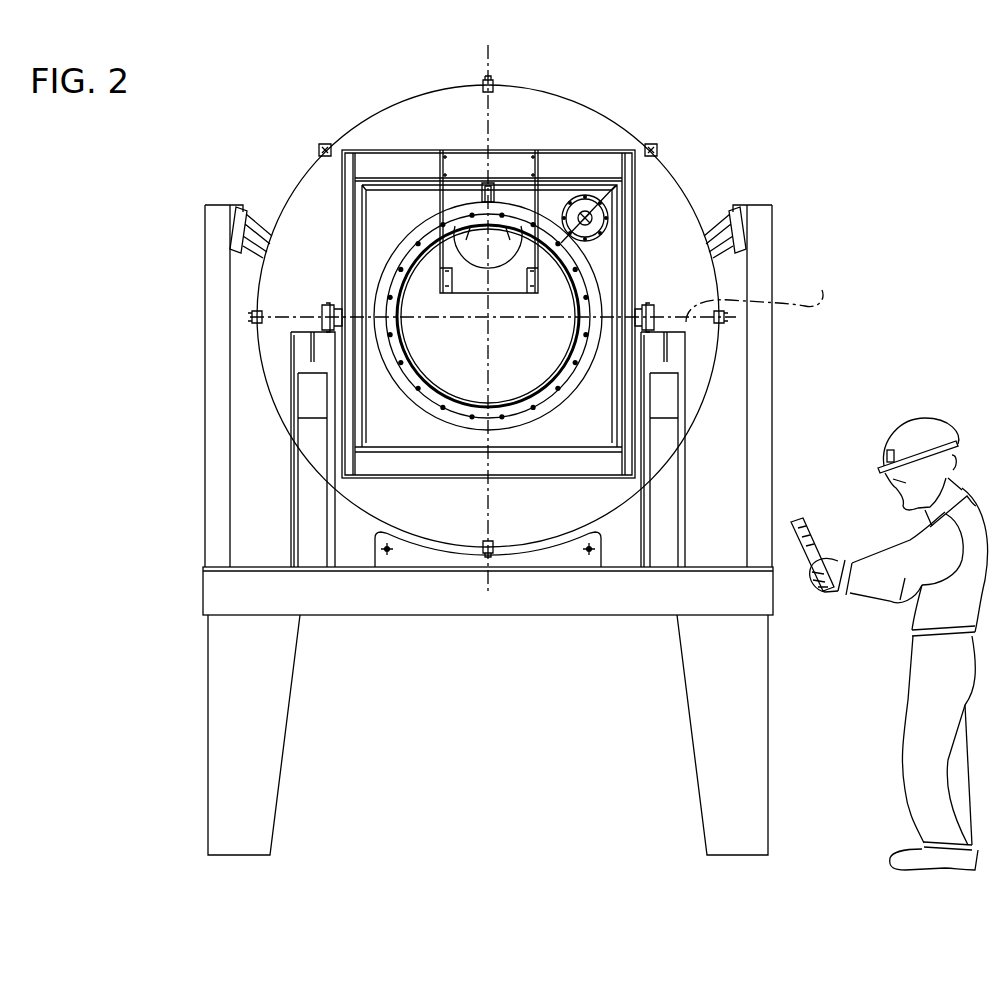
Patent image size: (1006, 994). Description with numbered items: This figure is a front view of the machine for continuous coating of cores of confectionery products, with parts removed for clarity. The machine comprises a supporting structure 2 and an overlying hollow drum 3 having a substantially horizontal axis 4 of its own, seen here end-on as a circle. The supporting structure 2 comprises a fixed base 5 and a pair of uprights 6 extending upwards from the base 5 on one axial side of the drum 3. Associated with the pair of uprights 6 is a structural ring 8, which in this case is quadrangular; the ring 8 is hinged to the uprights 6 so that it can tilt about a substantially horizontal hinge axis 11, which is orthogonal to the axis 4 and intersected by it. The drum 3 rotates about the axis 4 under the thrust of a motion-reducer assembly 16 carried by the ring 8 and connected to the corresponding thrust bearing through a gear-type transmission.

The supporting structure 2 is at (195, 710).
The hollow drum 3 is at (604, 109).
The axis 4 is at (546, 258).
The fixed base 5 is at (213, 586).
The pair of uprights 6 is at (692, 466).
The structural ring 8 is at (378, 146).
The hinge axis 11 is at (760, 293).
The motion-reducer assembly 16 is at (583, 180).